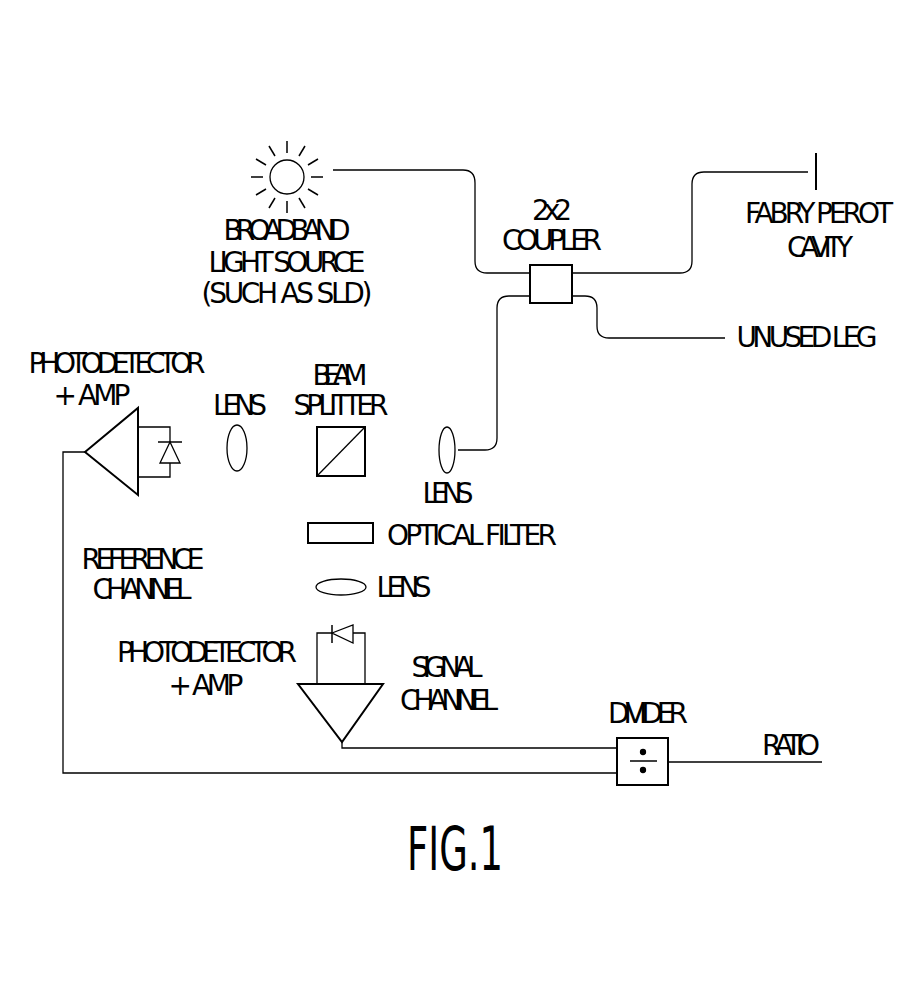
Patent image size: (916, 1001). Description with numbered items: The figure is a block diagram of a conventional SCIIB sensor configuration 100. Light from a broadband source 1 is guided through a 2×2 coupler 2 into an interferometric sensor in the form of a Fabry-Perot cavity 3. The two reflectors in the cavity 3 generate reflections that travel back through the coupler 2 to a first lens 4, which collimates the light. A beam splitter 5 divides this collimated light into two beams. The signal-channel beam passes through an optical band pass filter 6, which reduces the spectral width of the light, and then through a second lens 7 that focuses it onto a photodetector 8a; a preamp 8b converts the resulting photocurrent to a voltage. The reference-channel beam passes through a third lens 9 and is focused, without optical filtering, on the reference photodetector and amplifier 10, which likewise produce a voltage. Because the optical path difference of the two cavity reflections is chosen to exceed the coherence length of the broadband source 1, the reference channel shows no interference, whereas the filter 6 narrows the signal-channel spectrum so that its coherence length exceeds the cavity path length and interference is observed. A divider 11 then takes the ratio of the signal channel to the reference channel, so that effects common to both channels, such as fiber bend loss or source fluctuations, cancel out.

The SCIIB sensor configuration 100 is at (675, 103).
The broadband source 1 is at (268, 153).
The 2×2 coupler 2 is at (550, 293).
The Fabry-Perot cavity 3 is at (827, 172).
The first lens 4 is at (448, 467).
The beam splitter 5 is at (365, 450).
The optical band pass filter 6 is at (318, 523).
The second lens 7 is at (316, 587).
The photodetector 8a is at (357, 635).
The preamp 8b is at (282, 692).
The third lens 9 is at (235, 471).
The reference channel photodetector and preamp 10 is at (123, 325).
The divider 11 is at (662, 782).